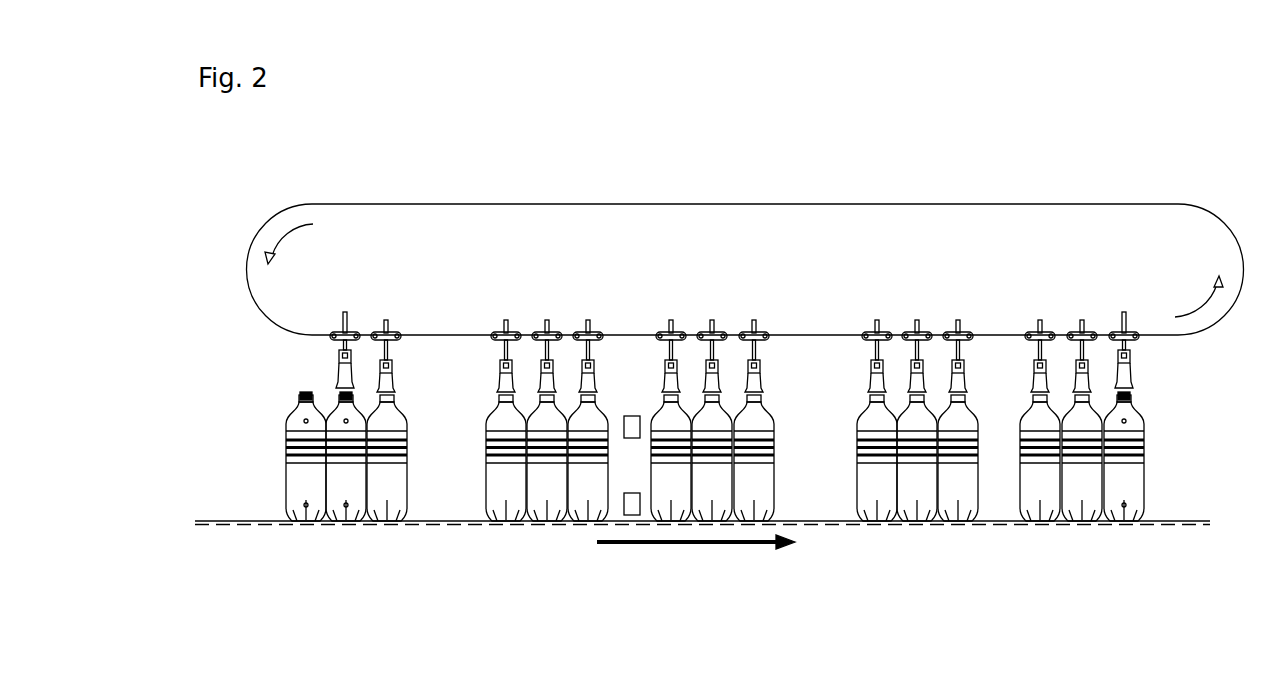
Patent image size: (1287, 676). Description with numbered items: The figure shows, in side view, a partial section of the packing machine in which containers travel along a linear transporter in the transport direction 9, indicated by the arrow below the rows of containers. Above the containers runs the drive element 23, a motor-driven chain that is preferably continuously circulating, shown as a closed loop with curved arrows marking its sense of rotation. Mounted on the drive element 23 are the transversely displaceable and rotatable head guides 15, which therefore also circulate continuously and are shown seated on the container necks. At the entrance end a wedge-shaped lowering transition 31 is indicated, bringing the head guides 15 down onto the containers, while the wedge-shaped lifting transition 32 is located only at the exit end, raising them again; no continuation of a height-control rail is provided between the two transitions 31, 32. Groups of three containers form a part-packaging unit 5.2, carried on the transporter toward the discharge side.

The drive element 23 is at (715, 196).
The wedge-shaped lowering transition 31 is at (364, 278).
The wedge-shaped lifting transition 32 is at (1104, 281).
The head guide 15 is at (322, 352).
The transport direction 9 is at (696, 552).
The part-packaging unit 5.2 is at (921, 526).